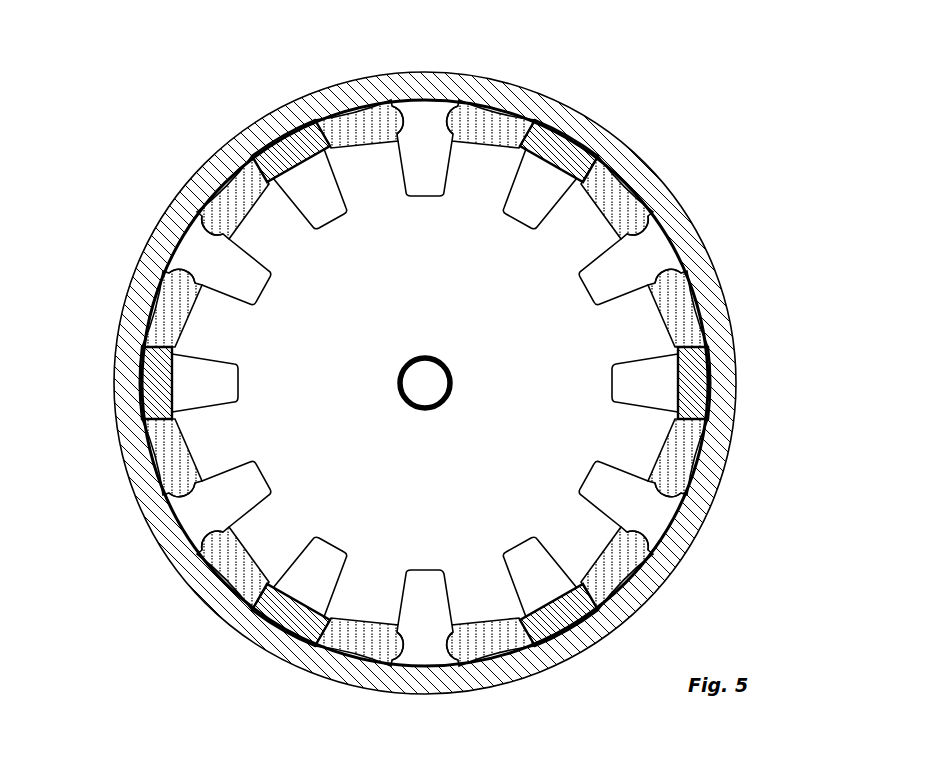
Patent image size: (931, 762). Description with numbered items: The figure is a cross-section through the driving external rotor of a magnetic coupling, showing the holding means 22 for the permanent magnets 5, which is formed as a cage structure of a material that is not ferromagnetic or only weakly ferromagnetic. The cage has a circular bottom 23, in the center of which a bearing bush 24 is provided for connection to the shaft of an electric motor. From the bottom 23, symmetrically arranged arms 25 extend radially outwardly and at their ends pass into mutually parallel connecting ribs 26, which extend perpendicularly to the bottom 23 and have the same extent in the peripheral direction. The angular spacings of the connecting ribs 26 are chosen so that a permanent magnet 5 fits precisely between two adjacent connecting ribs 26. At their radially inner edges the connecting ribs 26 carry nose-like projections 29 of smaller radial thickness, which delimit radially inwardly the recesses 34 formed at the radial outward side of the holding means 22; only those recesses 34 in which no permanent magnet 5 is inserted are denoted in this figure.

The holding means 22 is at (722, 162).
The circular bottom 23 is at (318, 363).
The bearing bush 24 is at (450, 405).
The arms 25 is at (353, 187).
The connecting ribs 26 is at (342, 118).
The projections 29 is at (455, 118).
The recesses 34 is at (408, 139).
The permanent magnets 5 is at (284, 150).